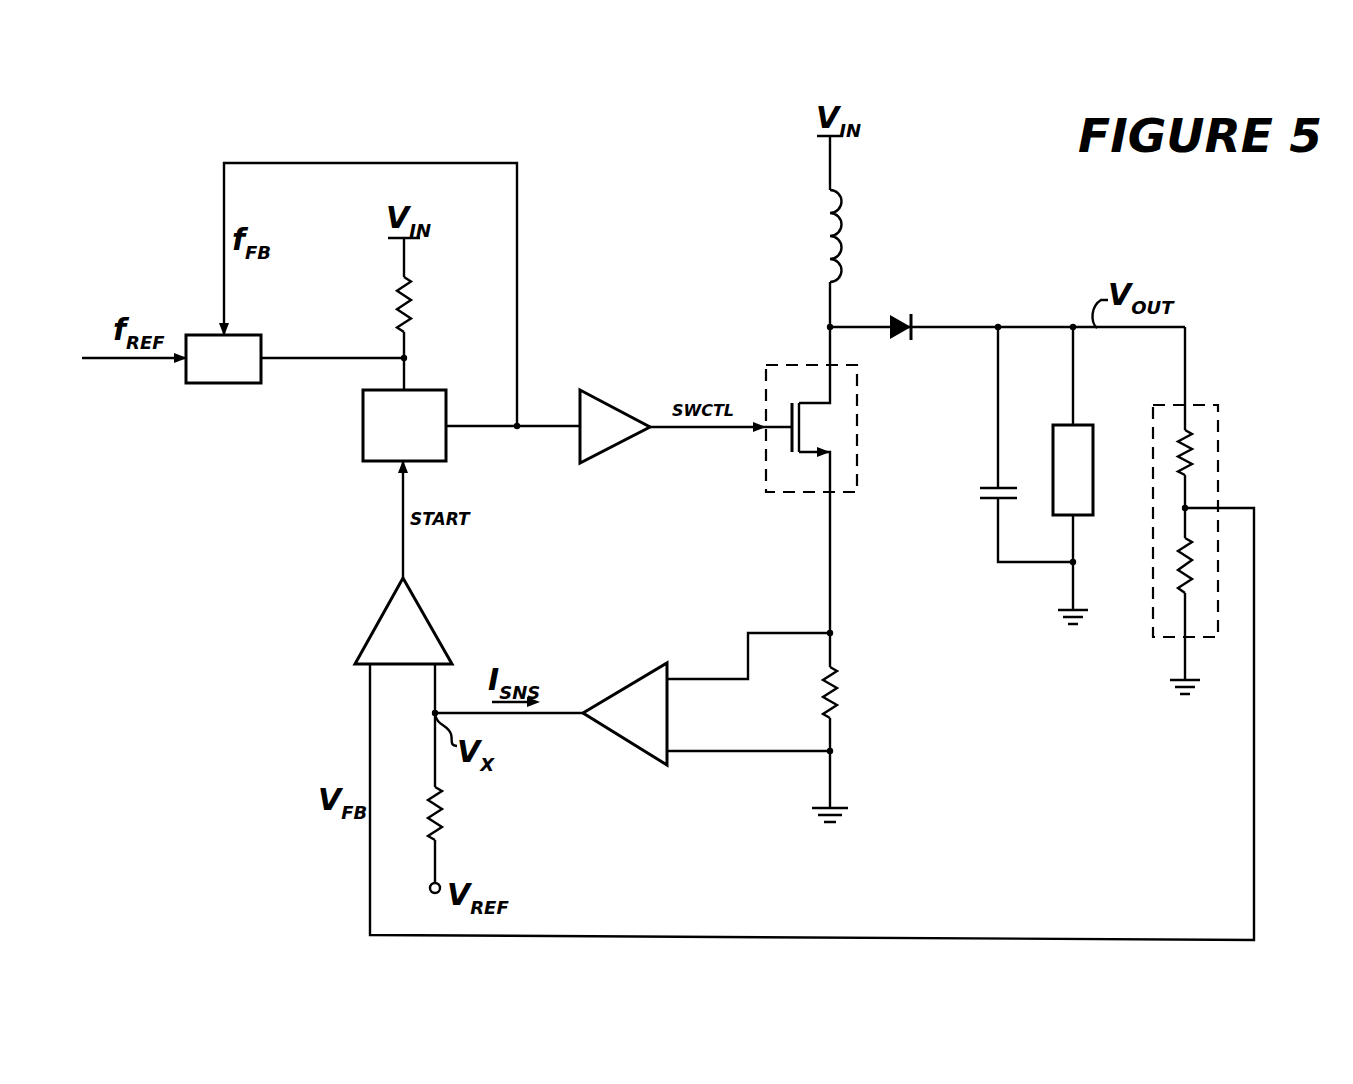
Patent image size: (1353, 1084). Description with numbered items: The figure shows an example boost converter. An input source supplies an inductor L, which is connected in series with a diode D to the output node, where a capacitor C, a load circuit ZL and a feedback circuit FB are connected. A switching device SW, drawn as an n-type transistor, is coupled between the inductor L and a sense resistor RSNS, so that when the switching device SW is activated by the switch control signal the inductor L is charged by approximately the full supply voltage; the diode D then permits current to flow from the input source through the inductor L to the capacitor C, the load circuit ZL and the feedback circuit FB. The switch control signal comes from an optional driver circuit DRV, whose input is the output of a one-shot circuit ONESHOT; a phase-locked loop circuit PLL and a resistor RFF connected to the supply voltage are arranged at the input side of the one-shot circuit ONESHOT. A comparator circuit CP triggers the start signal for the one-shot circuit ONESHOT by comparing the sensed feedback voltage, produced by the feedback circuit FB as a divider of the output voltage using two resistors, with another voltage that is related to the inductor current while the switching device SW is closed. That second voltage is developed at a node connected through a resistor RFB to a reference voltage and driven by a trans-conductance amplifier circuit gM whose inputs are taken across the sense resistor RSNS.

The phase-locked loop circuit PLL is at (223, 359).
The resistor R_FF RFF is at (432, 305).
The one-shot circuit ONESHOT is at (404, 425).
The driver circuit DRV is at (615, 426).
The switching device SW is at (857, 428).
The inductor L is at (848, 236).
The diode D is at (902, 312).
The capacitor C is at (1013, 444).
The load circuit ZL is at (1073, 468).
The feedback circuit FB is at (1218, 460).
The comparator circuit CP is at (403, 621).
The resistor R_FB RFB is at (463, 814).
The trans-conductance amplifier circuit gM is at (625, 714).
The resistor R_SNS RSNS is at (866, 650).